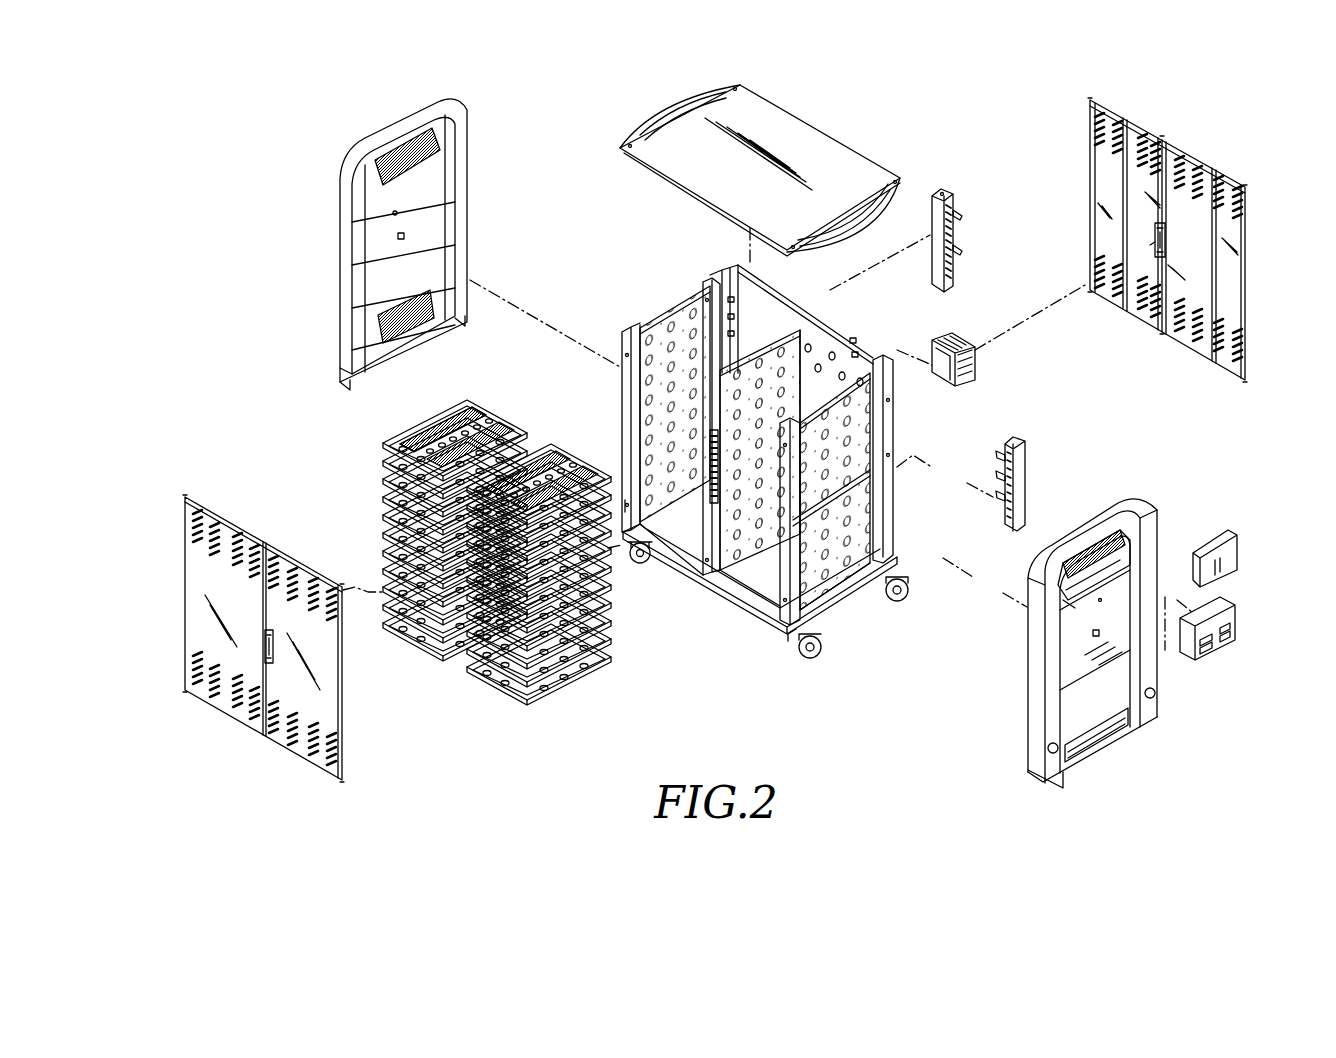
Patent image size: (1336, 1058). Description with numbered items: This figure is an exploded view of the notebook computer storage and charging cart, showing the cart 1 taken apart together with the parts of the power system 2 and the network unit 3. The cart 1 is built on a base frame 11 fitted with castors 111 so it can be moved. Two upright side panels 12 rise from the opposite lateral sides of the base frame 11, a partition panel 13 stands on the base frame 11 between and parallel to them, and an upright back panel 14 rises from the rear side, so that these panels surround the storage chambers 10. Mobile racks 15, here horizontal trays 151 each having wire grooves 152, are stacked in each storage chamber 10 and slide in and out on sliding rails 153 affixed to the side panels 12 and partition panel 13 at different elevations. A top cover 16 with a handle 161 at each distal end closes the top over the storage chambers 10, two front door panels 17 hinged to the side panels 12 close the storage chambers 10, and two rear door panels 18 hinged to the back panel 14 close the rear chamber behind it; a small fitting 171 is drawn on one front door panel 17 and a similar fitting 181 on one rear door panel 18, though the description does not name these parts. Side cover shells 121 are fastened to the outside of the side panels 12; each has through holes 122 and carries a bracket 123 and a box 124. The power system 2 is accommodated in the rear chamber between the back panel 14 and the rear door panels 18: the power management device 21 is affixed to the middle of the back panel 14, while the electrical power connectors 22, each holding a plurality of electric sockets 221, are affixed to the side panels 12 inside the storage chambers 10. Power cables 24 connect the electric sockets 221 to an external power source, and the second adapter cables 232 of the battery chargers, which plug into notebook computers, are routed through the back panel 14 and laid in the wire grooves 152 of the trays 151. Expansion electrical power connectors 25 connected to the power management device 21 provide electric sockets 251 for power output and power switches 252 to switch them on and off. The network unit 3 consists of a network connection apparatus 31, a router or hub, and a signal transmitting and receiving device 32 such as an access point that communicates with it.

The cart 1 is at (655, 281).
The storage chambers 10 is at (655, 350).
The base frame 11 is at (674, 548).
The castors 111 is at (806, 657).
The upright side panels 12 is at (653, 404).
The side cover shells 121 is at (383, 244).
The through holes 122 is at (1158, 692).
The bracket 123 is at (1098, 702).
The box 124 is at (1226, 605).
The partition panel 13 is at (727, 343).
The upright back panel 14 is at (833, 348).
The mobile racks 15 is at (463, 553).
The horizontal trays 151 is at (393, 448).
The wire grooves 152 is at (497, 414).
The sliding rails 153 is at (545, 682).
The top cover 16 is at (755, 170).
The handle 161 is at (675, 108).
The front door panels 17 is at (290, 638).
The door handle 171 is at (280, 654).
The rear door panels 18 is at (1168, 240).
The door handle 181 is at (1150, 236).
The power system 2 is at (982, 342).
The power management device 21 is at (973, 368).
The electrical power connectors 22 is at (1009, 338).
The electric sockets 221 is at (955, 238).
The second adapter cable 232 is at (958, 212).
The power cables 24 is at (999, 500).
The expansion electrical power connectors 25 is at (1062, 601).
The electric sockets 251 is at (1066, 606).
The power switches 252 is at (1066, 603).
The network unit 3 is at (699, 487).
The network connection apparatus 31 is at (713, 520).
The signal transmitting and receiving device 32 is at (1230, 549).